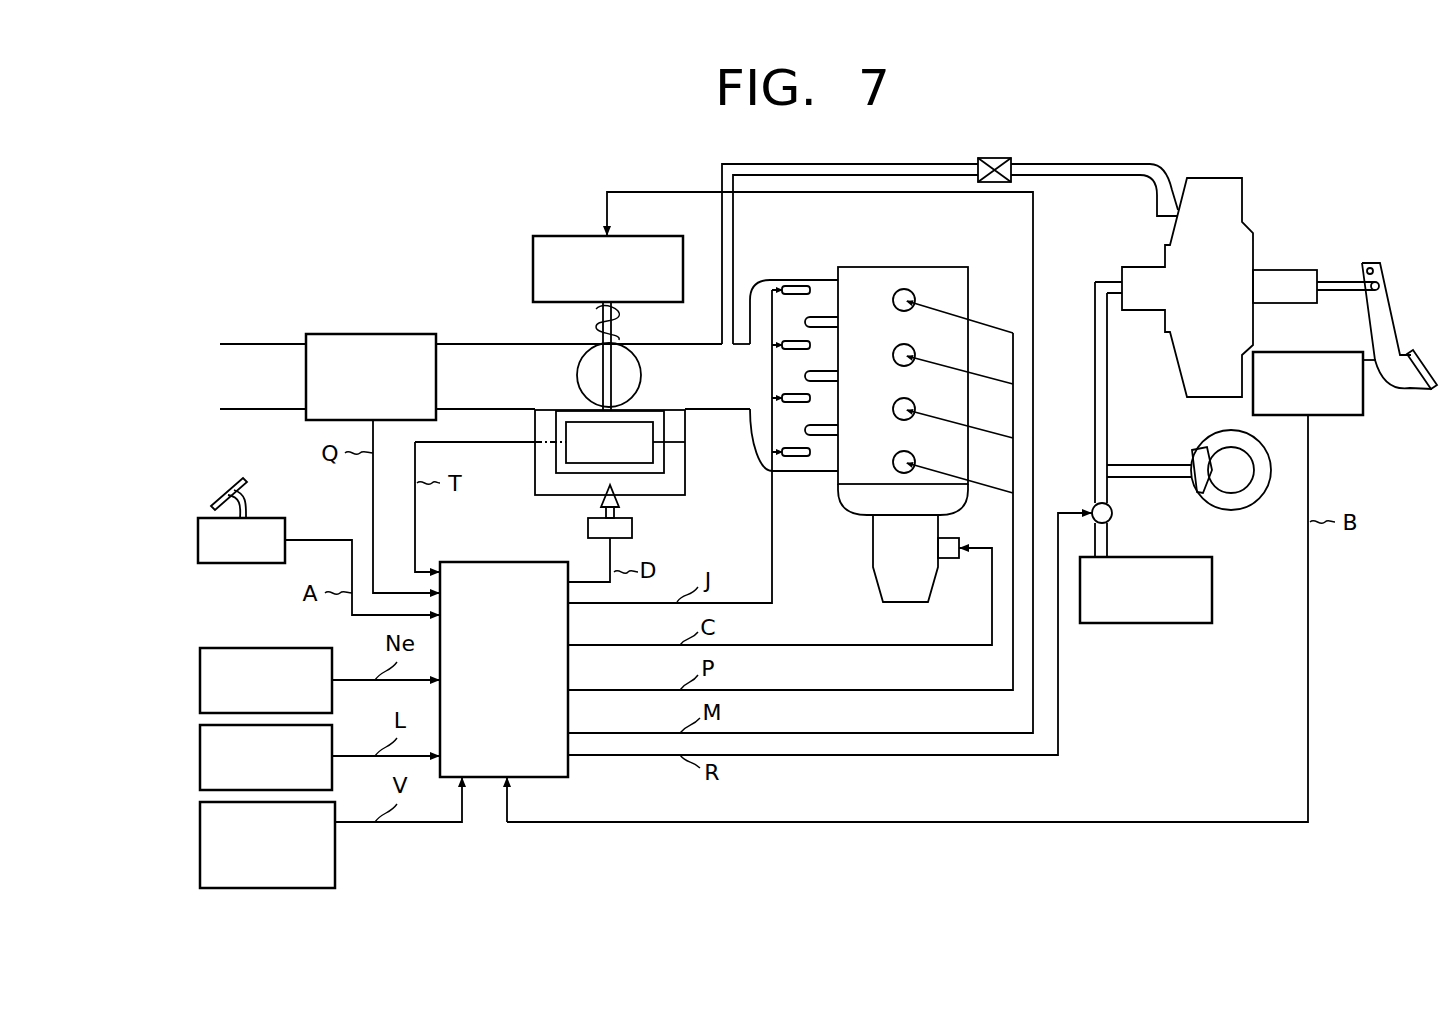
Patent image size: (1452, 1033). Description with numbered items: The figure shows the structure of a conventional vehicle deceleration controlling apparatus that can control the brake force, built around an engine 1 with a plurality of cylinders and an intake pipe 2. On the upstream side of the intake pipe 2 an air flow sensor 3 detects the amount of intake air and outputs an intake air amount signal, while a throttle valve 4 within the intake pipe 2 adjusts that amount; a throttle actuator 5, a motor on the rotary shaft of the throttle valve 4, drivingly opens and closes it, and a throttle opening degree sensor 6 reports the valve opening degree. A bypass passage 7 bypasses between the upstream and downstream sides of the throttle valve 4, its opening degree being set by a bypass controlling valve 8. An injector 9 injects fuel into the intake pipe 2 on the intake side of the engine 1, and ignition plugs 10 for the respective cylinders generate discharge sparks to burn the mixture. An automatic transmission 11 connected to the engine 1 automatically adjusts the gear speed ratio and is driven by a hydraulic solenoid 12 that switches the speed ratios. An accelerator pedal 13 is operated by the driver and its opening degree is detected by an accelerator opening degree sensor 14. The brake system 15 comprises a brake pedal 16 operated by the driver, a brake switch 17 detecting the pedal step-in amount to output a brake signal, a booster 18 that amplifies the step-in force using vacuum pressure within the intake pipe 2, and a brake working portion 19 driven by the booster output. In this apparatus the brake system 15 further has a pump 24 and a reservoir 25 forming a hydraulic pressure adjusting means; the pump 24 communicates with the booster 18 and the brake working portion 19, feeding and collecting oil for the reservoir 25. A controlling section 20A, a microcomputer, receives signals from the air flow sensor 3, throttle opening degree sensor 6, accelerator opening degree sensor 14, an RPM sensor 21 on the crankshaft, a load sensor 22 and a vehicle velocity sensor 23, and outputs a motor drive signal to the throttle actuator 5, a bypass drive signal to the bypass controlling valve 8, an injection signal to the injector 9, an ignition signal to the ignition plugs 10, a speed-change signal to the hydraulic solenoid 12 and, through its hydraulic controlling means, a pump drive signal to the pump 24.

The engine 1 is at (905, 267).
The intake pipe 2 is at (675, 344).
The air flow sensor 3 is at (376, 334).
The throttle valve 4 is at (643, 375).
The throttle actuator 5 is at (533, 257).
The throttle opening degree sensor 6 is at (685, 442).
The bypass passage 7 is at (690, 484).
The bypass controlling valve 8 is at (632, 526).
The injector 9 is at (797, 283).
The ignition plugs 10 is at (893, 300).
The automatic transmission 11 is at (873, 548).
The hydraulic solenoid 12 is at (945, 560).
The accelerator pedal 13 is at (244, 502).
The accelerator opening degree sensor 14 is at (196, 539).
The brake system 15 is at (1238, 520).
The brake pedal 16 is at (1393, 310).
The brake switch 17 is at (1336, 420).
The booster 18 is at (1242, 197).
The brake working portion 19 is at (1190, 454).
The controlling section 20A is at (483, 562).
The RPM sensor 21 is at (199, 670).
The load sensor 22 is at (199, 746).
The vehicle velocity sensor 23 is at (199, 822).
The pump 24 is at (1113, 513).
The reservoir 25 is at (1147, 625).